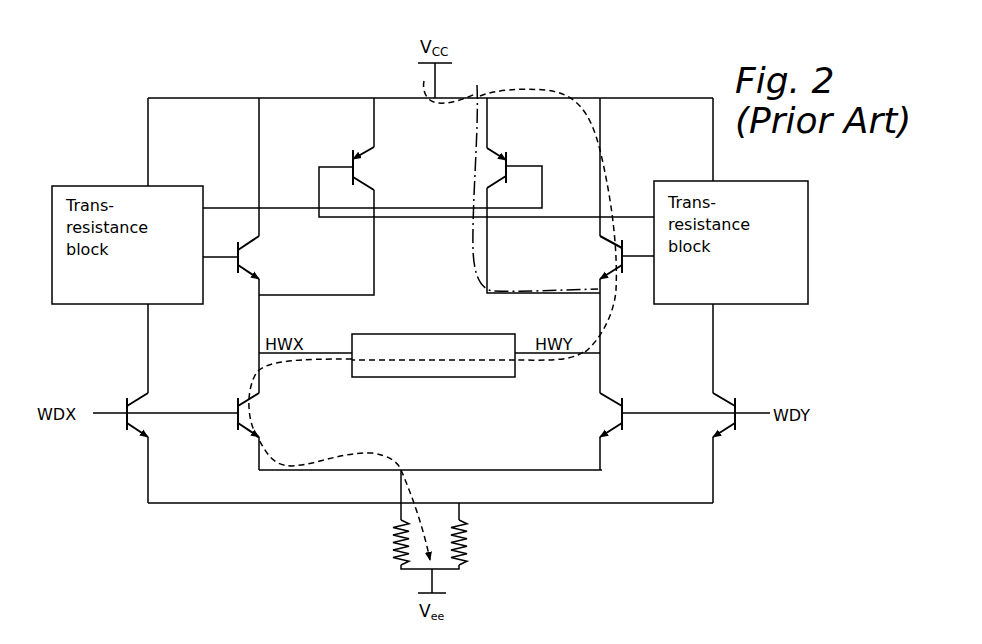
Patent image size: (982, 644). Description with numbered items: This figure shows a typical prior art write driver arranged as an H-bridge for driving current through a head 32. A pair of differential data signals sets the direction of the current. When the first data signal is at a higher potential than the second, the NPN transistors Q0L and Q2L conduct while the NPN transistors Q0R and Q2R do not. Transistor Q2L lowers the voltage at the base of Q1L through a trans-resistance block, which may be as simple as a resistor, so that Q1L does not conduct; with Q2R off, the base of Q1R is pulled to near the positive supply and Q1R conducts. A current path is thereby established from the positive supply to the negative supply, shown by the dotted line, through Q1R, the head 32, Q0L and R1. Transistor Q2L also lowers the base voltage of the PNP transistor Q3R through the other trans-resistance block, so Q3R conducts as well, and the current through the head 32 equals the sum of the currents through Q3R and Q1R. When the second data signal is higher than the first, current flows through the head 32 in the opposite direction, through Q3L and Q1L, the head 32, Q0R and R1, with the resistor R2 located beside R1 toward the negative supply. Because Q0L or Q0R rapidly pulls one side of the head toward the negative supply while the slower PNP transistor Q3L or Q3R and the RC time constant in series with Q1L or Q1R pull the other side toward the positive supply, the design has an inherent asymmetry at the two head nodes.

The head 32 is at (440, 334).
The NPN transistor Q0L is at (271, 414).
The NPN transistor Q0R is at (586, 415).
The transistor Q1L is at (267, 257).
The transistor Q1R is at (585, 257).
The NPN transistor Q2L is at (157, 407).
The NPN transistor Q2R is at (701, 407).
The PNP transistor Q3L is at (381, 168).
The PNP transistor Q3R is at (475, 168).
The resistor R1 is at (377, 517).
The resistor R2 is at (477, 534).